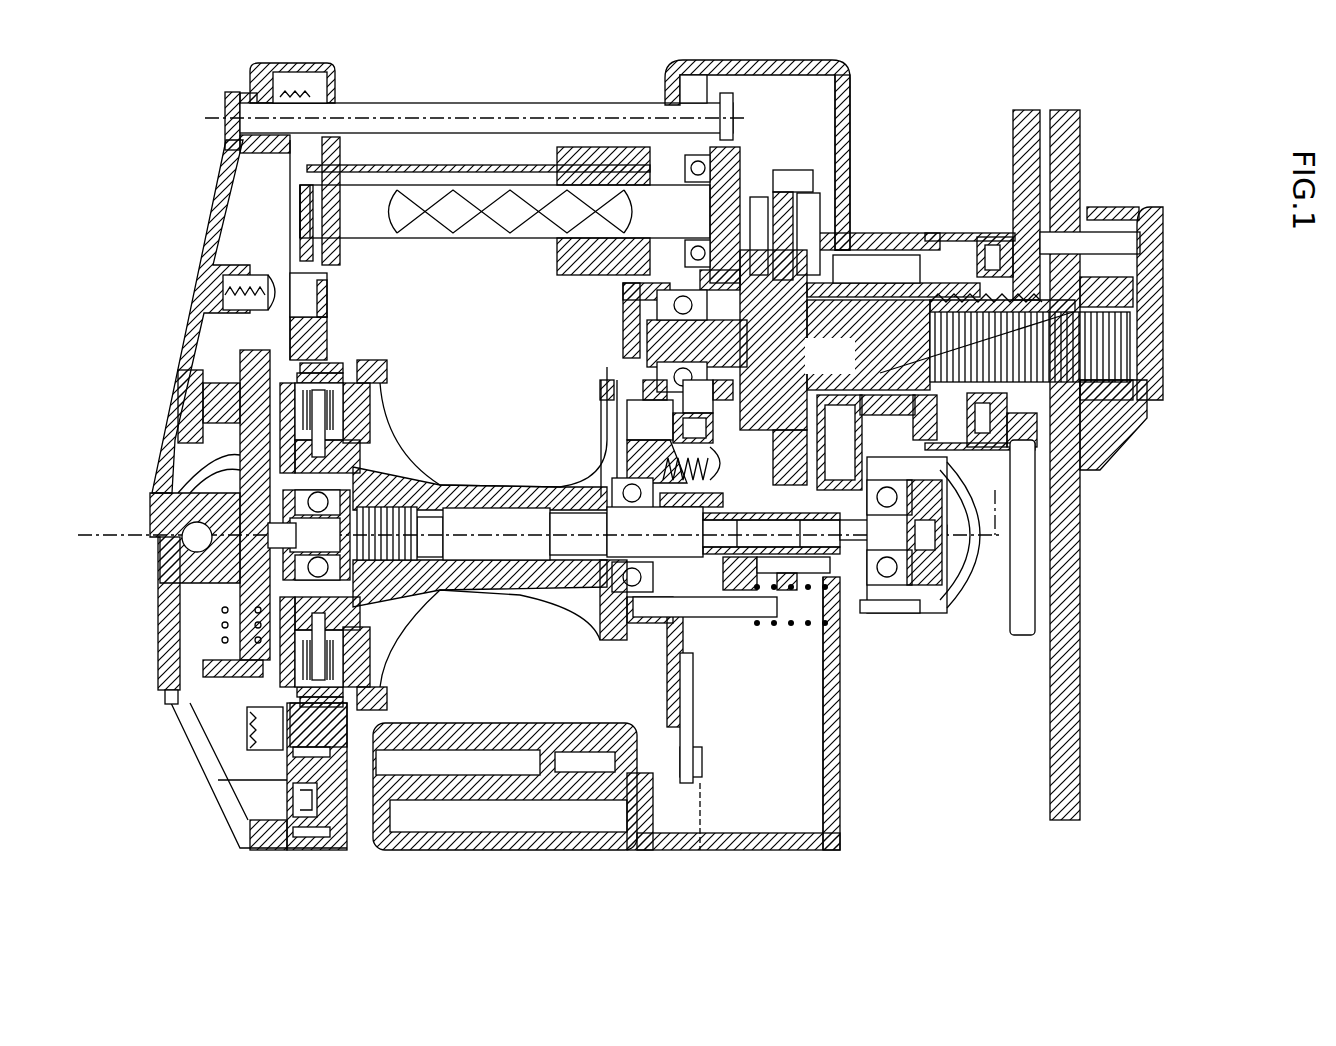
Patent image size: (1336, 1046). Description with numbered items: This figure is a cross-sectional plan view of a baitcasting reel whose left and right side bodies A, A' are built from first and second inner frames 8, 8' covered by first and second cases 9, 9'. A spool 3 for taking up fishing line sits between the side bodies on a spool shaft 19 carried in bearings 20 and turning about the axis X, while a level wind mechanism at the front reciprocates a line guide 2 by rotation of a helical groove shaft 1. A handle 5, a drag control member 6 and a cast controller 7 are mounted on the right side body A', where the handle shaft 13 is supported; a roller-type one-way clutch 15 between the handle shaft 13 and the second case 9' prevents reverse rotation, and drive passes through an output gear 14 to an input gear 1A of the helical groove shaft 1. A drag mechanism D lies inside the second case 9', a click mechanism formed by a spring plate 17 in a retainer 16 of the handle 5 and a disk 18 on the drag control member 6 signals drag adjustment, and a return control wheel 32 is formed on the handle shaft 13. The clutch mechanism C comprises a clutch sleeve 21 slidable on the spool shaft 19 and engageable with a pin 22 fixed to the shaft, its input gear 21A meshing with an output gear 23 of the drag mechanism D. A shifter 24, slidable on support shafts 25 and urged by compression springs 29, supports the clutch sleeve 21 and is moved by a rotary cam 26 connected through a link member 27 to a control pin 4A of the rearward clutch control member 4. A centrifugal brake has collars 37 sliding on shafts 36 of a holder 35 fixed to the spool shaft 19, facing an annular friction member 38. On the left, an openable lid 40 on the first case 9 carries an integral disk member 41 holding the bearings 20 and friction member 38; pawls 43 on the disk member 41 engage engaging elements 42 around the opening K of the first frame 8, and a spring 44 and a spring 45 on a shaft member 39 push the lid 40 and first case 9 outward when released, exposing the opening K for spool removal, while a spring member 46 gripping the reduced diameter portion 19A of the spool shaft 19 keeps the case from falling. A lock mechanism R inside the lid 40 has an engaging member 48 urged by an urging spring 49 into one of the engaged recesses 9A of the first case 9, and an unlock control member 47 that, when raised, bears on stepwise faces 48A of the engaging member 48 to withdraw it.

The helical groove shaft 1 is at (467, 234).
The input gear 1A is at (736, 157).
The line guide 2 is at (580, 265).
The spool 3 is at (567, 582).
The clutch control member 4 is at (560, 725).
The control pin 4A is at (700, 775).
The handle 5 is at (1066, 673).
The drag control member 6 is at (1023, 527).
The cast controller 7 is at (967, 565).
The first inner frame 8 is at (325, 83).
The second inner frame 8' is at (658, 83).
The first case 9 is at (227, 112).
The second case 9' is at (870, 162).
The engaged recesses 9A is at (208, 418).
The handle shaft 13 is at (1130, 335).
The output gear 14 is at (665, 405).
The roller-type one-way clutch 15 is at (940, 262).
The retainer 16 is at (1157, 282).
The spring plate 17 is at (1110, 255).
The disk 18 is at (1046, 245).
The spool shaft 19 is at (484, 517).
The reduced diameter portion 19A is at (887, 600).
The bearings 20 is at (848, 405).
The clutch sleeve 21 is at (781, 582).
The input gear 21A is at (837, 763).
The pin 22 is at (694, 582).
The output gear 23 is at (800, 170).
The shifter 24 is at (702, 548).
The support shafts 25 is at (837, 627).
The rotary cam 26 is at (693, 433).
The link member 27 is at (690, 725).
The compression springs 29 is at (842, 712).
The return control wheel 32 is at (760, 200).
The holder 35 is at (480, 478).
The shafts 36 is at (320, 437).
The collars 37 is at (355, 400).
The annular friction member 38 is at (345, 368).
The shaft member 39 is at (223, 135).
The lid 40 is at (168, 700).
The disk member 41 is at (303, 296).
The engaging elements 42 is at (340, 338).
The pawls 43 is at (335, 355).
The spring 44 is at (253, 323).
The spring 45 is at (300, 176).
The spring member 46 is at (963, 575).
The unlock control member 47 is at (150, 495).
The engaging member 48 is at (178, 385).
The stepwise faces 48A is at (247, 572).
The urging spring 49 is at (178, 642).
The left side body A is at (246, 495).
The right side body A' is at (822, 178).
The clutch mechanism C is at (795, 700).
The drag mechanism D is at (824, 206).
The opening K is at (387, 343).
The lock mechanism R is at (105, 373).
The axis X is at (542, 544).